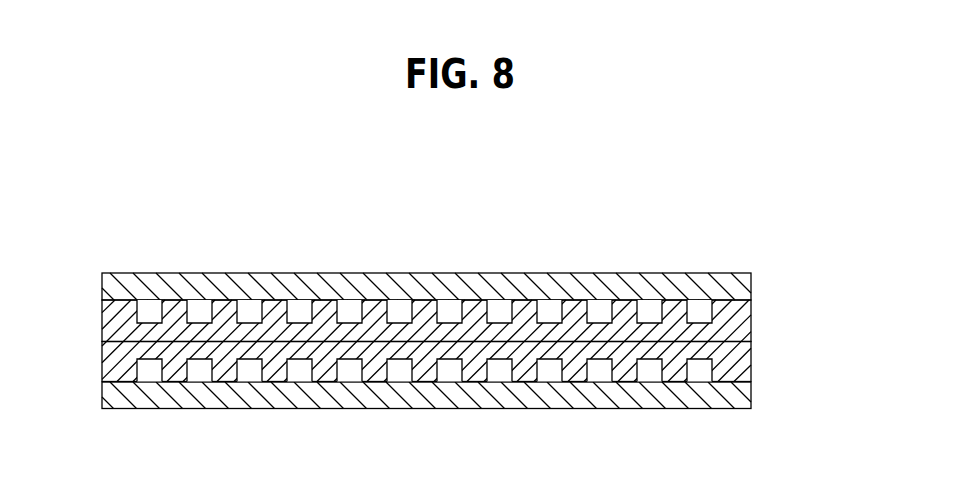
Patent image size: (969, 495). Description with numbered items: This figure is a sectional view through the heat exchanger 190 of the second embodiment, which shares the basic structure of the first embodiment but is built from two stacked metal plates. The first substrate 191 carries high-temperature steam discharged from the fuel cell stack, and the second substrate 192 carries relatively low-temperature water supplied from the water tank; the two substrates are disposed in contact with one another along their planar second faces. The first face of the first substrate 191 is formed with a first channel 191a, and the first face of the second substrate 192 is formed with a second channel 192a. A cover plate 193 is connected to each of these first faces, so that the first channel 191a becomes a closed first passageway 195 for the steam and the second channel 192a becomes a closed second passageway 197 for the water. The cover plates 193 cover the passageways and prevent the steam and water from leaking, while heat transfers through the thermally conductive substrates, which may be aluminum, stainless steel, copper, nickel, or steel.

The heat exchanger 190 is at (478, 172).
The first substrate 191 is at (753, 316).
The first channel 191a is at (500, 320).
The second substrate 192 is at (753, 353).
The second channel 192a is at (353, 364).
The cover plate 193 is at (123, 275).
The first passageway 195 is at (400, 312).
The second passageway 197 is at (252, 371).